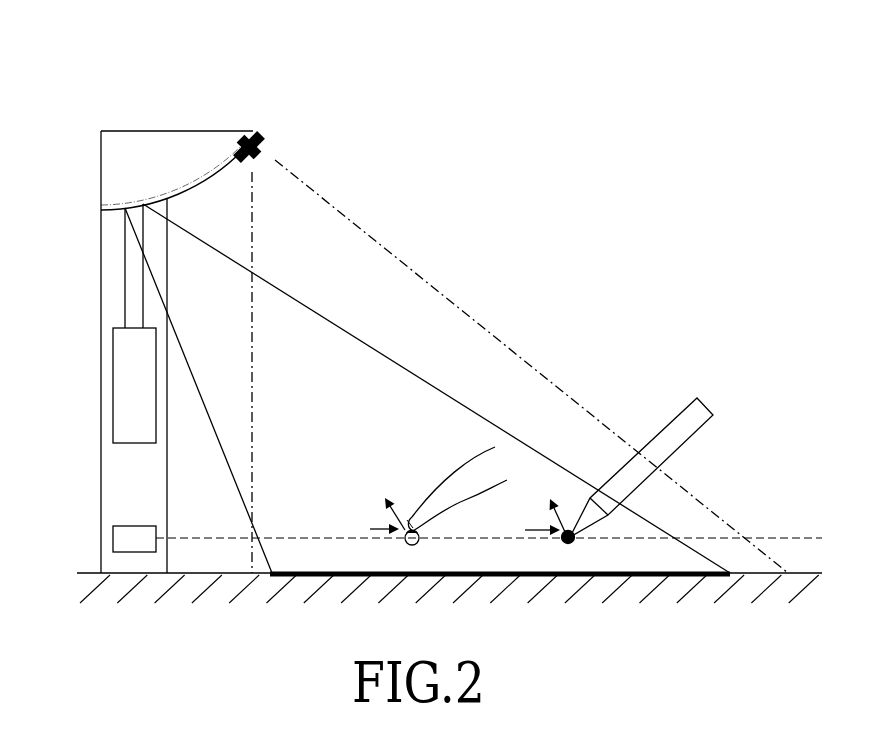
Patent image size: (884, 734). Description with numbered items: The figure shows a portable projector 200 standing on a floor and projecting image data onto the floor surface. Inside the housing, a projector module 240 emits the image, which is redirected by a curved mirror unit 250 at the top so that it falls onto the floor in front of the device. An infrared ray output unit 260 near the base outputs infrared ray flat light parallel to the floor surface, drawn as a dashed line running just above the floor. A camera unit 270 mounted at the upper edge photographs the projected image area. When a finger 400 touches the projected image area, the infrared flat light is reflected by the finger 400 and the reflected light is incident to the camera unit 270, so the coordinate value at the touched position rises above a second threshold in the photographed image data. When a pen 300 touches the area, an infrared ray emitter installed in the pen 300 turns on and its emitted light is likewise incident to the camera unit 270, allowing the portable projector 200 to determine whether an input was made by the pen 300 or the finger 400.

The portable projector 200 is at (76, 114).
The projector module 240 is at (113, 385).
The mirror unit 250 is at (183, 190).
The infrared ray output unit 260 is at (113, 539).
The camera unit 270 is at (263, 137).
The pen 300 is at (673, 435).
The finger 400 is at (452, 480).